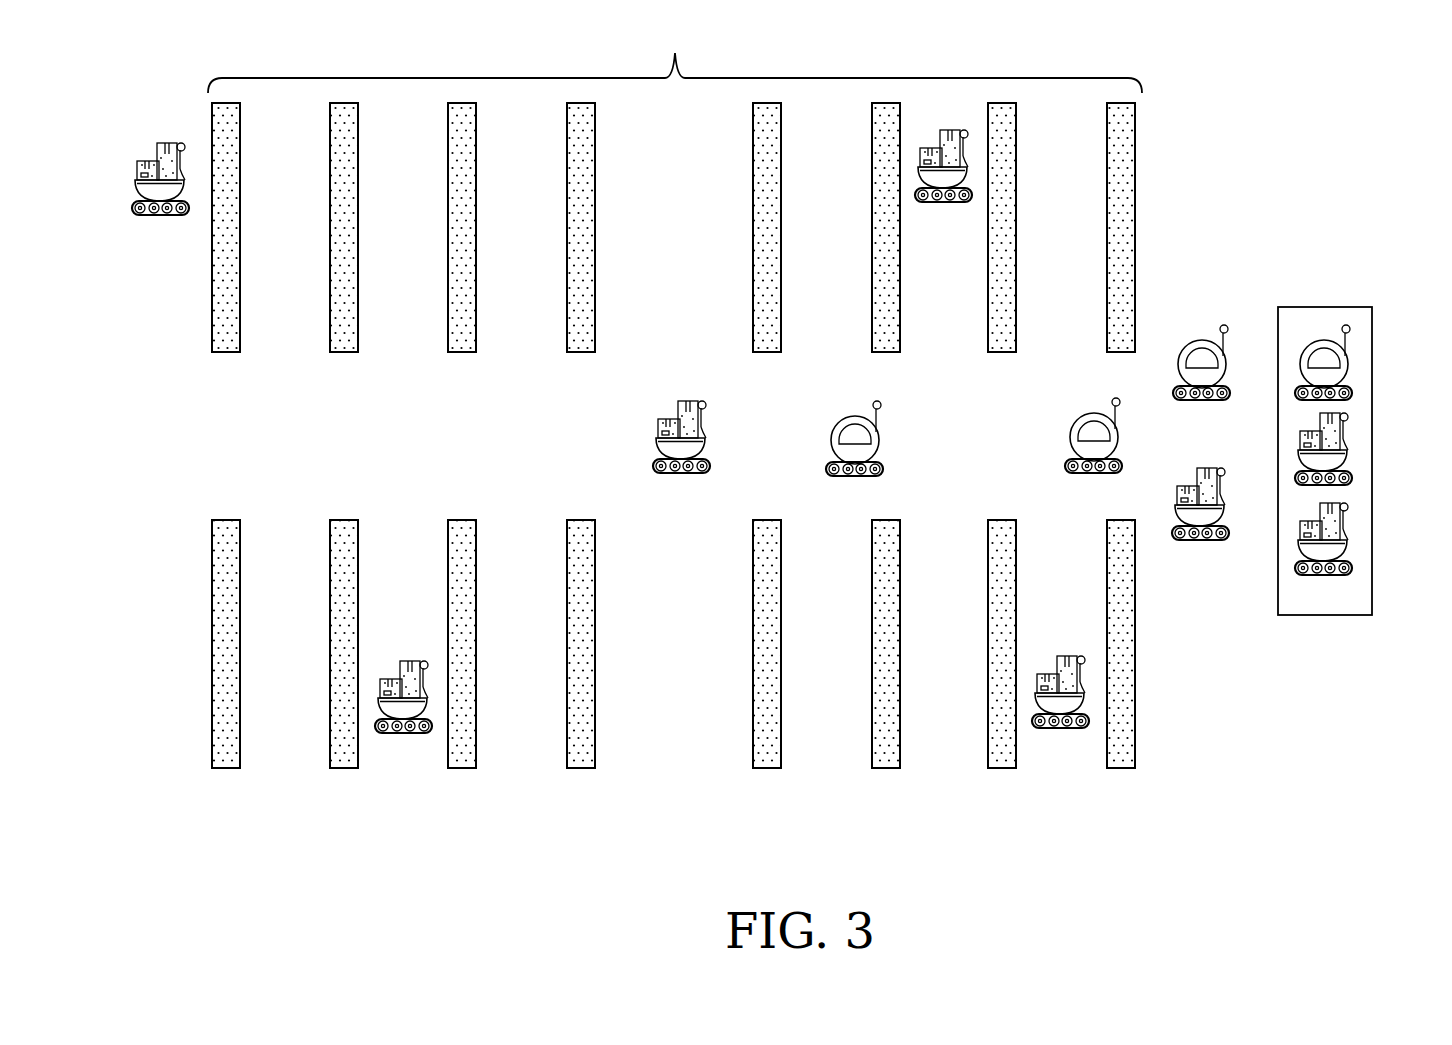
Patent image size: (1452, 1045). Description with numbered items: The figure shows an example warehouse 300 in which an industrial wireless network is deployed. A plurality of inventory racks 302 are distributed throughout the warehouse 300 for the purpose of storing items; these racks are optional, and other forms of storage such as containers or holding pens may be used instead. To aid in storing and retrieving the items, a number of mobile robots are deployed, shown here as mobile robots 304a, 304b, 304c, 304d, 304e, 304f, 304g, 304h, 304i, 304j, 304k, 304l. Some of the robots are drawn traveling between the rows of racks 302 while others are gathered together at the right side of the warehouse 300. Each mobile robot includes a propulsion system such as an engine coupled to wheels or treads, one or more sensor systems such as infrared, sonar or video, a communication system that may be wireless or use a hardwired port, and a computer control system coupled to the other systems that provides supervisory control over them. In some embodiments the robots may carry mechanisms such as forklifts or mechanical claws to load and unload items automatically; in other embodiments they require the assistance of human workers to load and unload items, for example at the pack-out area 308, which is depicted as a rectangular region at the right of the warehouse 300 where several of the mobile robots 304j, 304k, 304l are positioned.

The warehouse 300 is at (1316, 107).
The inventory racks 302 is at (675, 396).
The mobile robot 304a is at (681, 474).
The mobile robot 304b is at (857, 477).
The mobile robot 304c is at (1094, 474).
The mobile robot 304d is at (1202, 401).
The mobile robot 304e is at (919, 203).
The mobile robot 304f is at (1037, 729).
The mobile robot 304g is at (147, 216).
The mobile robot 304h is at (380, 734).
The mobile robot 304i is at (1202, 541).
The mobile robot 304j is at (1346, 372).
The mobile robot 304k is at (1344, 457).
The mobile robot 304l is at (1342, 535).
The pack-out area 308 is at (1323, 306).